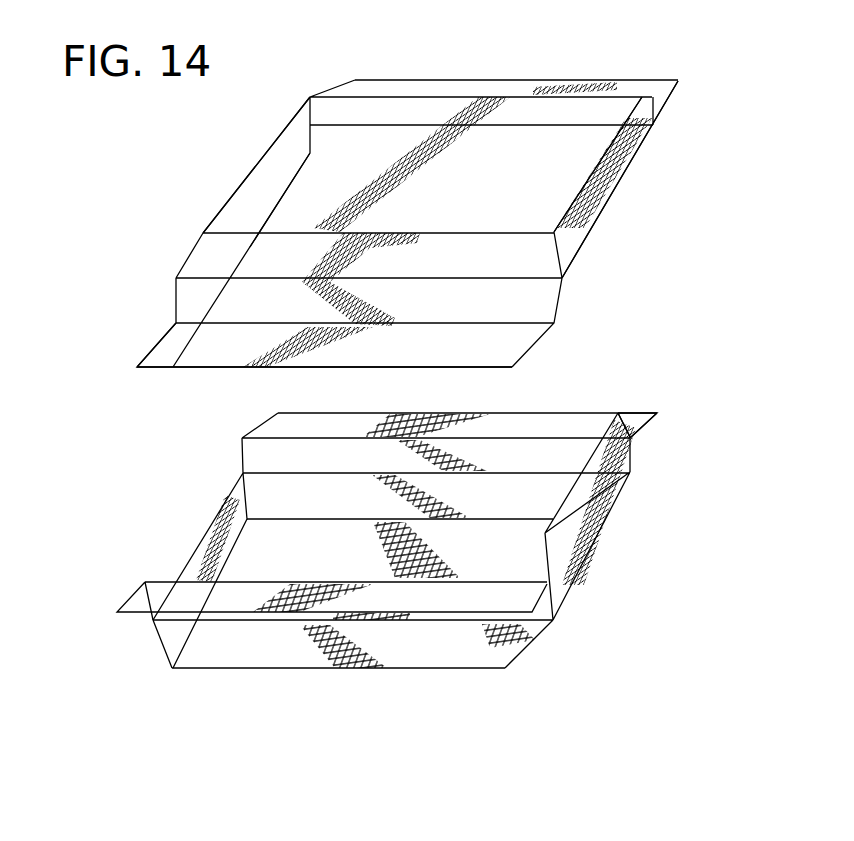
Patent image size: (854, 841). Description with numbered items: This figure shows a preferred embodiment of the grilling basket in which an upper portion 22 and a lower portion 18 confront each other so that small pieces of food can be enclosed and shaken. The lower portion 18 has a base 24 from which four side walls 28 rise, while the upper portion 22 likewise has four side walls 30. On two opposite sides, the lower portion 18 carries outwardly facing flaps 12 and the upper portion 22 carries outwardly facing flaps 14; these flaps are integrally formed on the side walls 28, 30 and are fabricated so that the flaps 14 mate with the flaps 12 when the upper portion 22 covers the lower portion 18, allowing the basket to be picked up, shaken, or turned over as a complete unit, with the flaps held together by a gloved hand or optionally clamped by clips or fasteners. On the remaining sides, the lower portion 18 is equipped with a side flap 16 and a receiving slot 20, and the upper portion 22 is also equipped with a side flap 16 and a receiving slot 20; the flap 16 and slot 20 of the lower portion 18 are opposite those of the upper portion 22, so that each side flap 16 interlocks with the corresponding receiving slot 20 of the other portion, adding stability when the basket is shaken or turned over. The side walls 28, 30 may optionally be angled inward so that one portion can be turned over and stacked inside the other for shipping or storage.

The outwardly facing flap 12 is at (647, 428).
The outwardly facing flap 14 is at (670, 110).
The side flap 16 is at (168, 372).
The lower portion 18 is at (357, 693).
The receiving slot 20 is at (610, 200).
The upper portion 22 is at (555, 60).
The base 24 is at (265, 680).
The side wall 28 is at (172, 633).
The side wall 30 is at (299, 110).